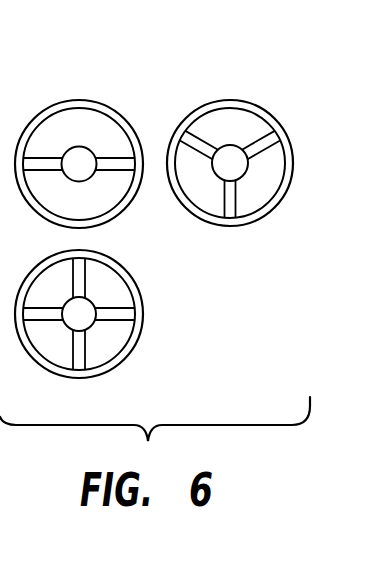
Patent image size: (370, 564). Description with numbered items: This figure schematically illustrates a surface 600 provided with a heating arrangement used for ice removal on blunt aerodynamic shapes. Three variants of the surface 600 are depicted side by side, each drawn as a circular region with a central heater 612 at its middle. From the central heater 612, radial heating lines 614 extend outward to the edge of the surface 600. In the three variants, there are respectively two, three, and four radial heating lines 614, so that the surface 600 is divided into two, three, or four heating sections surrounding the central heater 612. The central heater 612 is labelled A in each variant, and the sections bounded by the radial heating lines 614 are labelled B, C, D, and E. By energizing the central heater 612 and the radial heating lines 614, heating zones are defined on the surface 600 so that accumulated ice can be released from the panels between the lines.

The surface 600 is at (116, 98).
The central heater 612 is at (100, 325).
The radial heating lines 614 is at (243, 213).